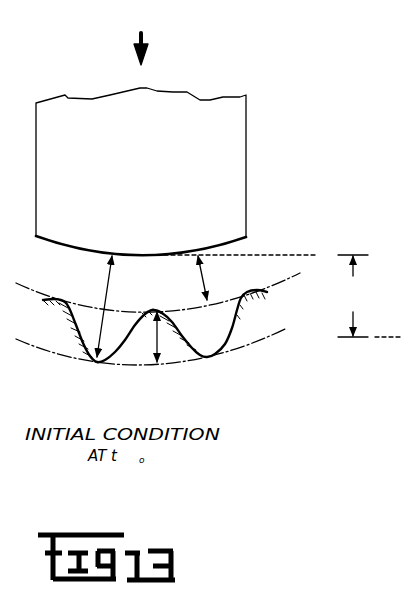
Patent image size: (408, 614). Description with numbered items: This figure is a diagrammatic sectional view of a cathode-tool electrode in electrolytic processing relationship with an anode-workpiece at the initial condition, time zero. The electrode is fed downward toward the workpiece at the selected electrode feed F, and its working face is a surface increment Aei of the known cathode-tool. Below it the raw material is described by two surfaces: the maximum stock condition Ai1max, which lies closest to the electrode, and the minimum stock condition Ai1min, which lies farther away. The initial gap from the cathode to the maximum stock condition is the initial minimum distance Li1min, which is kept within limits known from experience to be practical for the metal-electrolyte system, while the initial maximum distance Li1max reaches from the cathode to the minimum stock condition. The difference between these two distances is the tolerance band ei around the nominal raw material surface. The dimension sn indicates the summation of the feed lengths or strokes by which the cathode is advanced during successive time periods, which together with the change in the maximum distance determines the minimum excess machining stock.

The electrode feed F is at (144, 38).
The cathode-tool surface increment Aei is at (230, 243).
The initial maximum distance Li1max is at (108, 278).
The initial minimum distance Li1min is at (171, 278).
The tolerance band ei is at (156, 338).
The maximum stock condition surface Ai1max is at (229, 296).
The minimum stock condition surface Ai1min is at (268, 337).
The summation of feed lengths sn is at (369, 296).